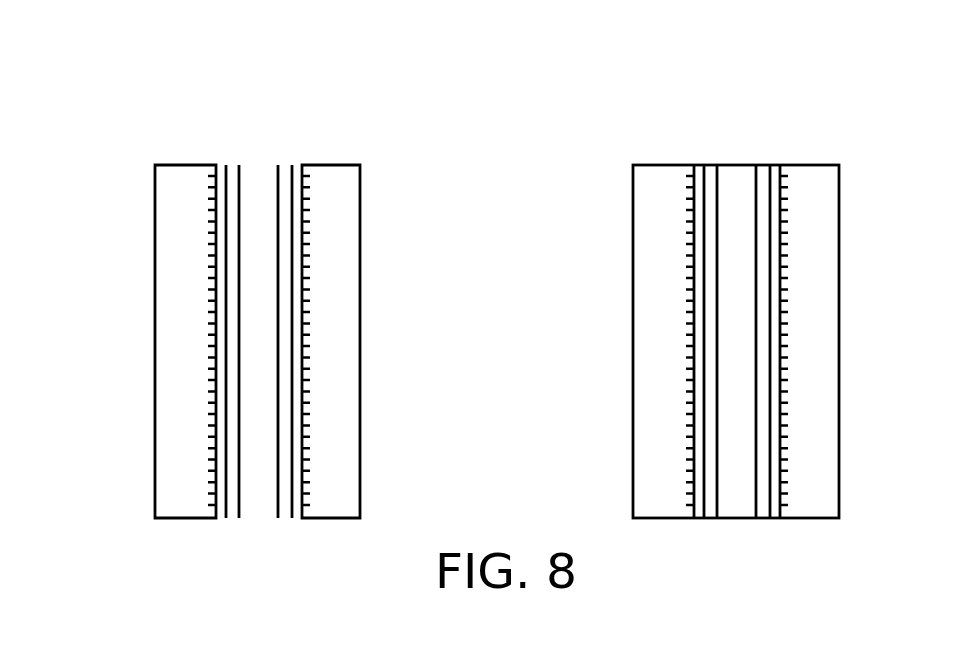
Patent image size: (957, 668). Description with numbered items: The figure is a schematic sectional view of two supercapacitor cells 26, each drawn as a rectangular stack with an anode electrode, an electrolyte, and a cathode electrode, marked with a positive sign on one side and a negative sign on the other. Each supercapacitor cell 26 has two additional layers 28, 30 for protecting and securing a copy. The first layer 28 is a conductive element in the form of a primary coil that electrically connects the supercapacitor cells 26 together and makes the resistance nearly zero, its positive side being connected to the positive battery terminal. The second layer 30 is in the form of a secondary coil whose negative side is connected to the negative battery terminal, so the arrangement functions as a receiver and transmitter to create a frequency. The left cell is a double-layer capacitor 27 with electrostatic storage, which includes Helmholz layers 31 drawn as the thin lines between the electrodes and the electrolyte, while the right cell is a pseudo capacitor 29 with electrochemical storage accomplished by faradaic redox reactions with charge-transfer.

The supercapacitor cell 26 is at (460, 296).
The double-layer capacitor 27 is at (185, 88).
The first layer 28 is at (155, 192).
The pseudo capacitor 29 is at (732, 148).
The second layer 30 is at (358, 193).
The Helmholz layer 31 is at (303, 178).